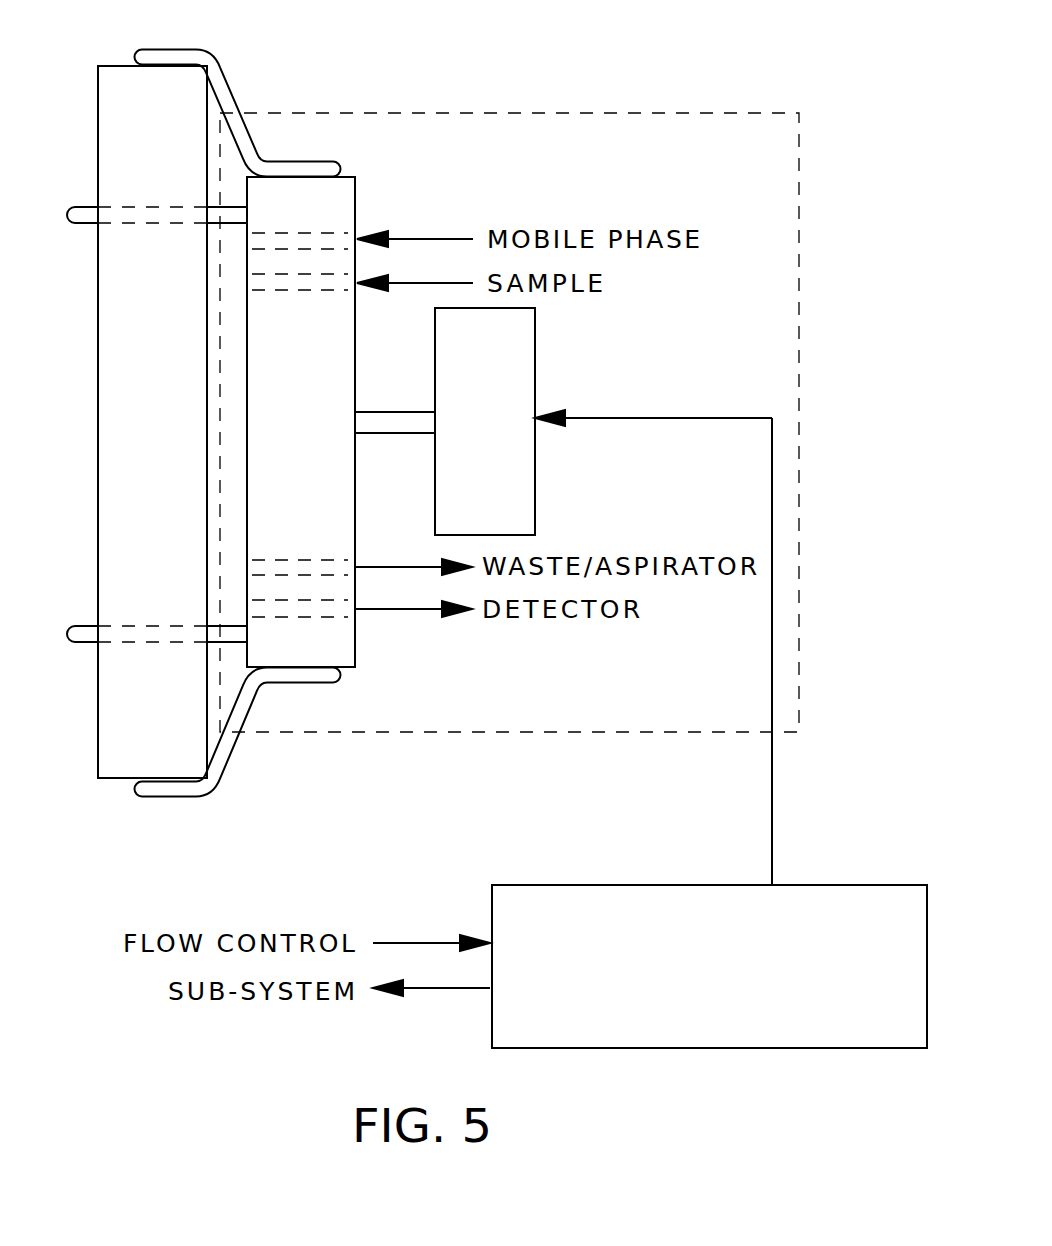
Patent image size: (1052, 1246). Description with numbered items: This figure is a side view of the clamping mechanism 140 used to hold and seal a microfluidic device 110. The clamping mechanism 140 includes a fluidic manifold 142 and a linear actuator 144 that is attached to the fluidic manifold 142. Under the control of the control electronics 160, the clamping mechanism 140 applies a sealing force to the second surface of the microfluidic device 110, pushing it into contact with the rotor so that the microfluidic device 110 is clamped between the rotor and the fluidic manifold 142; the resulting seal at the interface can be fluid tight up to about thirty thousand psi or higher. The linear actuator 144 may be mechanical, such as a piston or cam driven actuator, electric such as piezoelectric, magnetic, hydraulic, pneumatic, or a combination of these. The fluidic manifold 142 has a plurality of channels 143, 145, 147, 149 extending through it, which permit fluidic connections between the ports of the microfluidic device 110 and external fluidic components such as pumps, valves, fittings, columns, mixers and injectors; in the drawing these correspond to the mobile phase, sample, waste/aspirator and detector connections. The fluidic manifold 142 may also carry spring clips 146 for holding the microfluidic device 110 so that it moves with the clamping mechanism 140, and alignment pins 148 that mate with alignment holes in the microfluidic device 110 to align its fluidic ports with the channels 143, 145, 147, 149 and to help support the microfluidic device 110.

The microfluidic device 110 is at (116, 65).
The clamping mechanism 140 is at (799, 153).
The fluidic manifold 142 is at (305, 160).
The channel 143 is at (262, 233).
The linear actuator 144 is at (535, 328).
The channel 145 is at (262, 290).
The spring clips 146 is at (237, 80).
The channel 147 is at (260, 560).
The alignment pins 148 is at (85, 207).
The channel 149 is at (260, 617).
The control electronics 160 is at (835, 885).